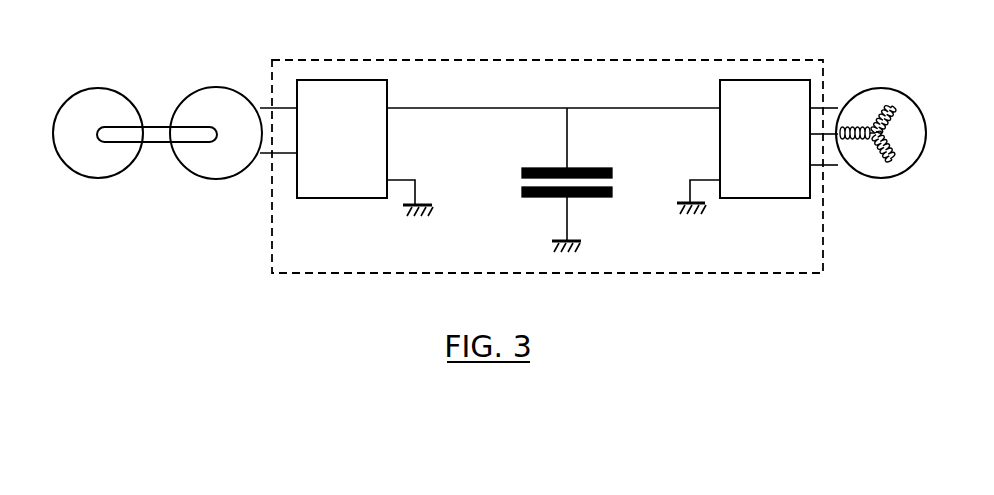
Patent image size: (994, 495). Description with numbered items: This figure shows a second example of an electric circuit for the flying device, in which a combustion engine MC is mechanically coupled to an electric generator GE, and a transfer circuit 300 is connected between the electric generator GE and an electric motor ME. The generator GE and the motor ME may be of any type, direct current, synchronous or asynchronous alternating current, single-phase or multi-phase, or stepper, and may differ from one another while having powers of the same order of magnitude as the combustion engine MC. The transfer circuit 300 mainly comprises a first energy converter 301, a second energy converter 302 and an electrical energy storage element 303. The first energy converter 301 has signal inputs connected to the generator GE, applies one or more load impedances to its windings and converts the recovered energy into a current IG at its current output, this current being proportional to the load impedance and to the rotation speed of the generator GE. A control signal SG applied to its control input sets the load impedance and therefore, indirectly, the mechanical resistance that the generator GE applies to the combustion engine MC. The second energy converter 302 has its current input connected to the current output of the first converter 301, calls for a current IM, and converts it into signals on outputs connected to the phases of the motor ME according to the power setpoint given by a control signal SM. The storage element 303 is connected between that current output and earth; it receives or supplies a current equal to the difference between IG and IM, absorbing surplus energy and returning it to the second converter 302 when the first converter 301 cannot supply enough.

The combustion engine MC is at (80, 177).
The electric generator GE is at (193, 177).
The transfer circuit 300 is at (525, 60).
The first energy converter 301 is at (332, 198).
The second energy converter 302 is at (748, 198).
The electrical energy storage element 303 is at (530, 197).
The electric motor ME is at (893, 173).
The control signal SG is at (342, 72).
The control signal SM is at (765, 72).
The current IG is at (466, 97).
The current IM is at (653, 97).